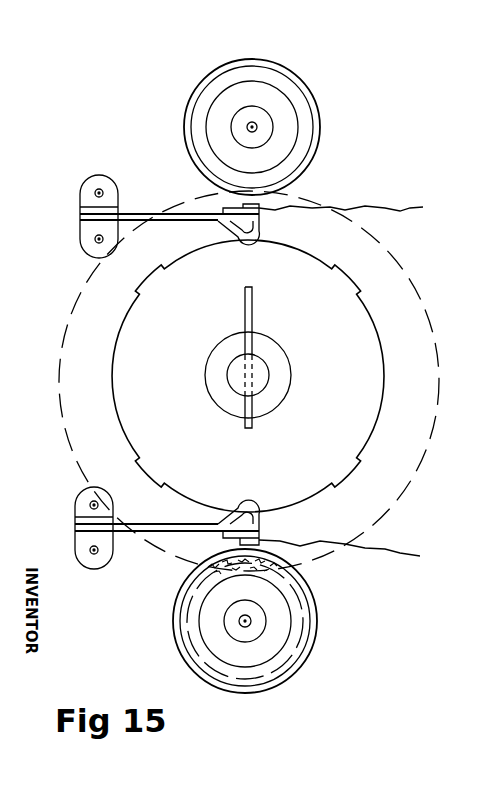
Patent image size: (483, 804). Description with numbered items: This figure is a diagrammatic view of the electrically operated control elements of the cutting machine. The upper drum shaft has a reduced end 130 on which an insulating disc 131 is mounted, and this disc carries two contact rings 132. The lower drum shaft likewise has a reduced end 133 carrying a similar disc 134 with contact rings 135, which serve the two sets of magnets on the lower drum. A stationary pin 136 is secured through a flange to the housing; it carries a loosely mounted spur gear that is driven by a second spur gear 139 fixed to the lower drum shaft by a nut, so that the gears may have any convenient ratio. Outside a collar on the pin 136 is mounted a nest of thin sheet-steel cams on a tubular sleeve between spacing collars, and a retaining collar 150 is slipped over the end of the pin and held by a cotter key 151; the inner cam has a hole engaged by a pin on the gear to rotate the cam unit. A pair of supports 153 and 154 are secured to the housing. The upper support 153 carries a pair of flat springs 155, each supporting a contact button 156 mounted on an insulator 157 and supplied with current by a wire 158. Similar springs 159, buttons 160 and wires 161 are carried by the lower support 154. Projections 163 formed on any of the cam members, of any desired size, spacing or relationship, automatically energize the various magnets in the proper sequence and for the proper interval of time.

The reduced end 130 is at (265, 133).
The insulating disc 131 is at (307, 118).
The contact rings 132 is at (313, 97).
The reduced end 133 is at (246, 636).
The disc 134 is at (278, 638).
The contact rings 135 is at (298, 663).
The stationary pin 136 is at (262, 383).
The second spur gear 139 is at (298, 620).
The retaining collar 150 is at (285, 372).
The cotter key 151 is at (254, 300).
The upper support 153 is at (86, 209).
The lower support 154 is at (86, 534).
The flat springs 155 is at (168, 214).
The contact button 156 is at (306, 218).
The insulator 157 is at (262, 214).
The wire 158 is at (372, 207).
The springs 159 is at (158, 532).
The buttons 160 is at (257, 543).
The wires 161 is at (358, 548).
The projections 163 is at (355, 476).